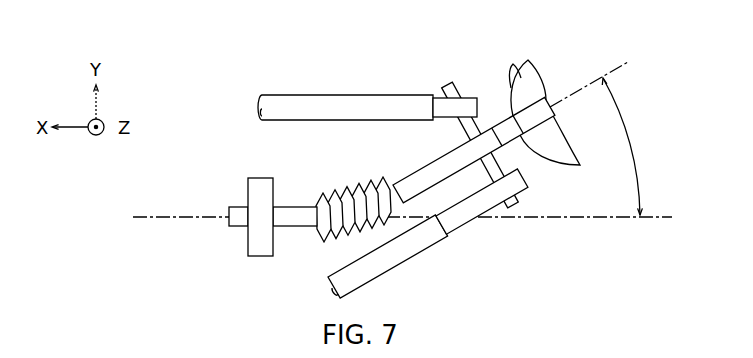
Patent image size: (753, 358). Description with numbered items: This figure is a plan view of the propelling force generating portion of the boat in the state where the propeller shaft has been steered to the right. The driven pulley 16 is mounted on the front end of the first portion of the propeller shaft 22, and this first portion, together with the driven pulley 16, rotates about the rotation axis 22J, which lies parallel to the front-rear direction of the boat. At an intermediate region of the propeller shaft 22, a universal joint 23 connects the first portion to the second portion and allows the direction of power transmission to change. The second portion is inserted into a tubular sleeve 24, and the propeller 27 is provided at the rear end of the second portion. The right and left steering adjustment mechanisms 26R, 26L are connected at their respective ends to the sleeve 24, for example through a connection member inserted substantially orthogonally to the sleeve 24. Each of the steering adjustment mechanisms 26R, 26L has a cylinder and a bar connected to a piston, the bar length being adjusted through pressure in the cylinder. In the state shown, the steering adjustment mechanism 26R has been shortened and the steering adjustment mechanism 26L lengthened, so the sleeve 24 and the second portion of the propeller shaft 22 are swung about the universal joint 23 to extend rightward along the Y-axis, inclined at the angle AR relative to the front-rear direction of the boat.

The driven pulley 16 is at (258, 175).
The propeller shaft 22 is at (293, 232).
The rotation axis 22J is at (176, 214).
The universal joint 23 is at (345, 190).
The sleeve 24 is at (427, 163).
The right steering adjustment mechanism 26R is at (468, 93).
The left steering adjustment mechanism 26L is at (472, 226).
The propeller 27 is at (540, 73).
The rightward angle AR is at (604, 138).